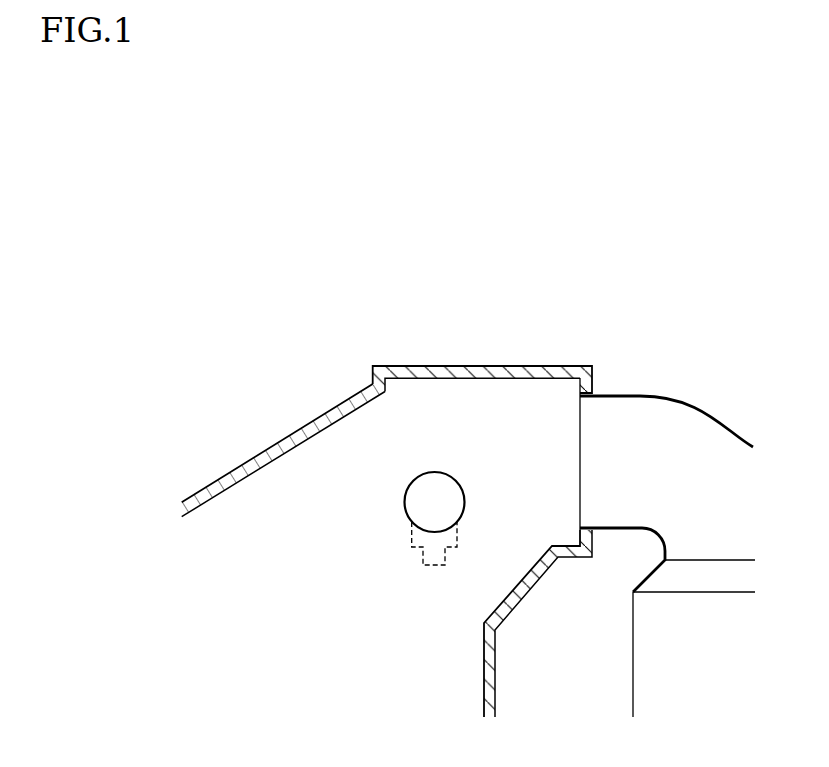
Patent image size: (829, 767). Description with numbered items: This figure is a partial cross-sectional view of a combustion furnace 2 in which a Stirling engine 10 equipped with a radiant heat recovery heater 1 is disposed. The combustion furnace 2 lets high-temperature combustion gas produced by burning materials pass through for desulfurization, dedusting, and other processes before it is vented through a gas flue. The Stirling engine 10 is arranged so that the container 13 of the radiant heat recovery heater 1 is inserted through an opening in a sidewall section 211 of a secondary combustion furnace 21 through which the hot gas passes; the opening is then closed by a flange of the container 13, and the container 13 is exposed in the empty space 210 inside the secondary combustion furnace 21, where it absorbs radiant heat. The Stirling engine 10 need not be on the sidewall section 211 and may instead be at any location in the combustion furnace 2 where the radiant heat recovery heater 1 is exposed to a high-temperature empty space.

The radiant heat recovery heater 1 is at (438, 492).
The combustion furnace 2 is at (264, 264).
The Stirling engine 10 is at (405, 487).
The container 13 is at (417, 505).
The secondary combustion furnace 21 is at (357, 512).
The empty space 210 is at (483, 500).
The sidewall section 211 is at (420, 407).